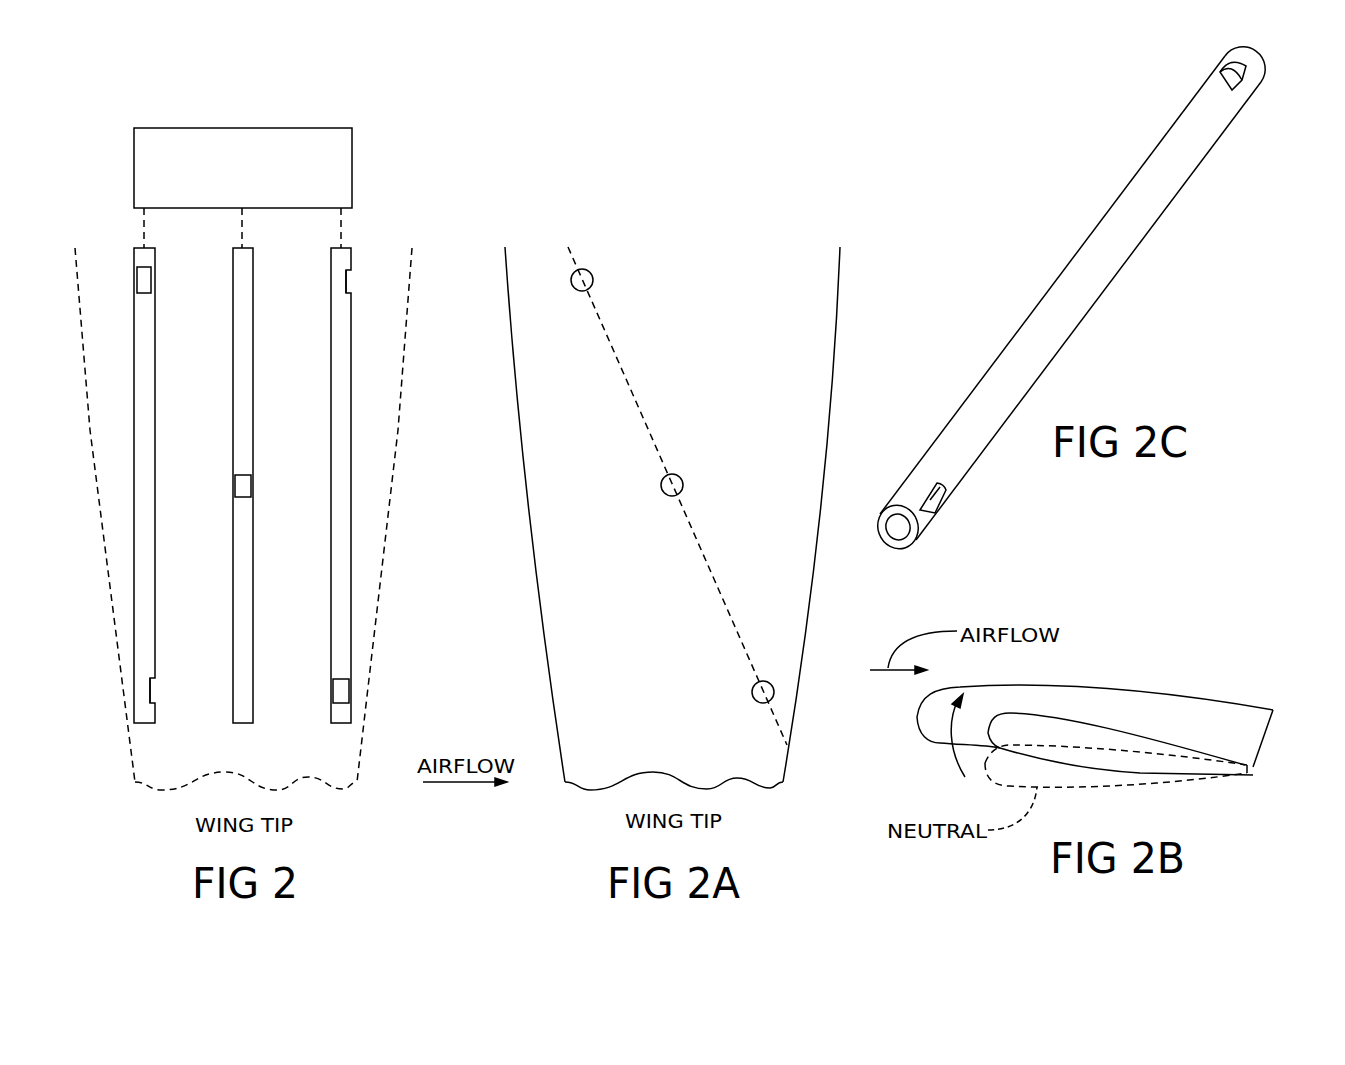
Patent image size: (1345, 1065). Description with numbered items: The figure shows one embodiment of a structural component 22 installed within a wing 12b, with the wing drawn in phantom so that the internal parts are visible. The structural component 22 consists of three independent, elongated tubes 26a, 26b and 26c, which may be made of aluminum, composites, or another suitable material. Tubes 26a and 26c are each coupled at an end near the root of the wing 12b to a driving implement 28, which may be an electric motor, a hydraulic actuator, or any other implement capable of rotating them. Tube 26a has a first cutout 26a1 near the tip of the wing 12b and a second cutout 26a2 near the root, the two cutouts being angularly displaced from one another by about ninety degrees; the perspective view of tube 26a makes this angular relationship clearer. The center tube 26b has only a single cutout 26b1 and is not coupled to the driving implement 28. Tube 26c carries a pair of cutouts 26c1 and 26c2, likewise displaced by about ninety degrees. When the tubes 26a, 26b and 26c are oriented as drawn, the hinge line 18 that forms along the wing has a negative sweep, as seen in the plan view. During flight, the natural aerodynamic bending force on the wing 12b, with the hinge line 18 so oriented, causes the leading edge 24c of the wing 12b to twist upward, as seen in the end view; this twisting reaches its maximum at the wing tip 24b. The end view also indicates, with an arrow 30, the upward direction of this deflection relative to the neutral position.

In FIG. 2, the wing 12b is at (390, 518).
In FIG. 2A, the wing 12b is at (833, 373).
In FIG. 2A, the hinge line 18 is at (712, 582).
In FIG. 2, the structural component 22 is at (372, 613).
In FIG. 2, the wing tip 24b is at (317, 775).
In FIG. 2A, the wing tip 24b is at (730, 770).
In FIG. 2B, the wing tip 24b is at (1120, 767).
In FIG. 2, the leading edge 24c is at (120, 693).
In FIG. 2A, the leading edge 24c is at (548, 665).
In FIG. 2B, the leading edge 24c is at (935, 717).
In FIG. 2, the tube 26a is at (134, 472).
In FIG. 2C, the tube 26a is at (1072, 252).
In FIG. 2, the first cutout 26a1 is at (153, 688).
In FIG. 2C, the first cutout 26a1 is at (940, 502).
In FIG. 2, the second cutout 26a2 is at (138, 280).
In FIG. 2A, the second cutout 26a2 is at (592, 280).
In FIG. 2C, the second cutout 26a2 is at (1222, 70).
In FIG. 2, the center tube 26b is at (243, 366).
In FIG. 2, the cutout 26b1 is at (243, 483).
In FIG. 2A, the cutout 26b1 is at (677, 473).
In FIG. 2, the tube 26c is at (331, 535).
In FIG. 2, the cutout 26c1 is at (342, 692).
In FIG. 2A, the cutout 26c1 is at (755, 697).
In FIG. 2, the cutout 26c2 is at (347, 280).
In FIG. 2, the driving implement 28 is at (352, 153).
In FIG. 2B, the deflection direction arrow 30 is at (953, 763).